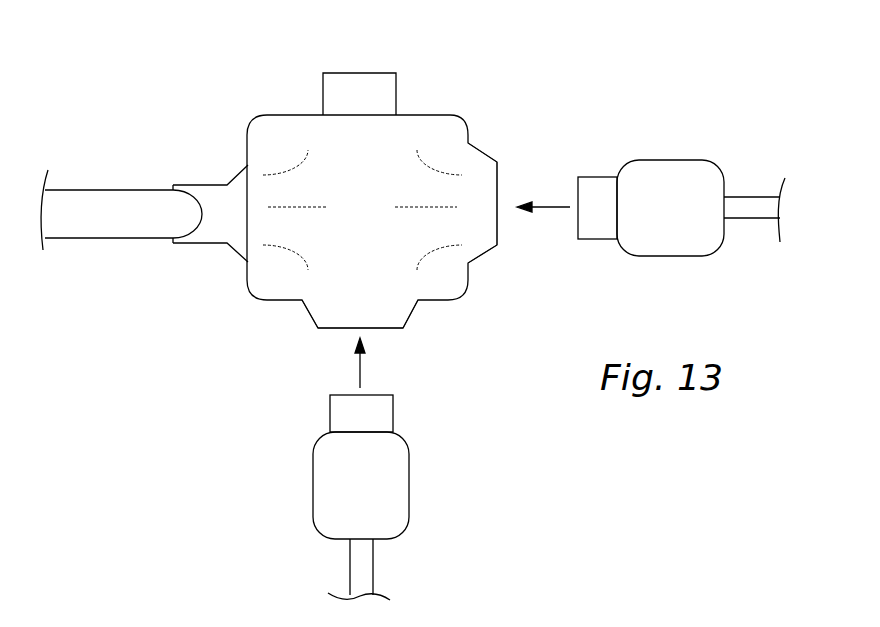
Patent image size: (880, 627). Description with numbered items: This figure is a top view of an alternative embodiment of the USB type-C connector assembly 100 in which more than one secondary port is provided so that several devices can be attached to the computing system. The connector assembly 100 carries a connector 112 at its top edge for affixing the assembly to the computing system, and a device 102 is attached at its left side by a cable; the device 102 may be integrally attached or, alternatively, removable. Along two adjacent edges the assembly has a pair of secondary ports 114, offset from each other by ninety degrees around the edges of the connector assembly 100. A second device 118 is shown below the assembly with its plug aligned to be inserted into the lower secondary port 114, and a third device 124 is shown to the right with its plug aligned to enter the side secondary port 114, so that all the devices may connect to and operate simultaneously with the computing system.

The connector assembly 100 is at (453, 115).
The device 102 is at (77, 190).
The connector 112 is at (352, 72).
The secondary port 114 is at (496, 184).
The second device 118 is at (350, 557).
The third device 124 is at (738, 193).